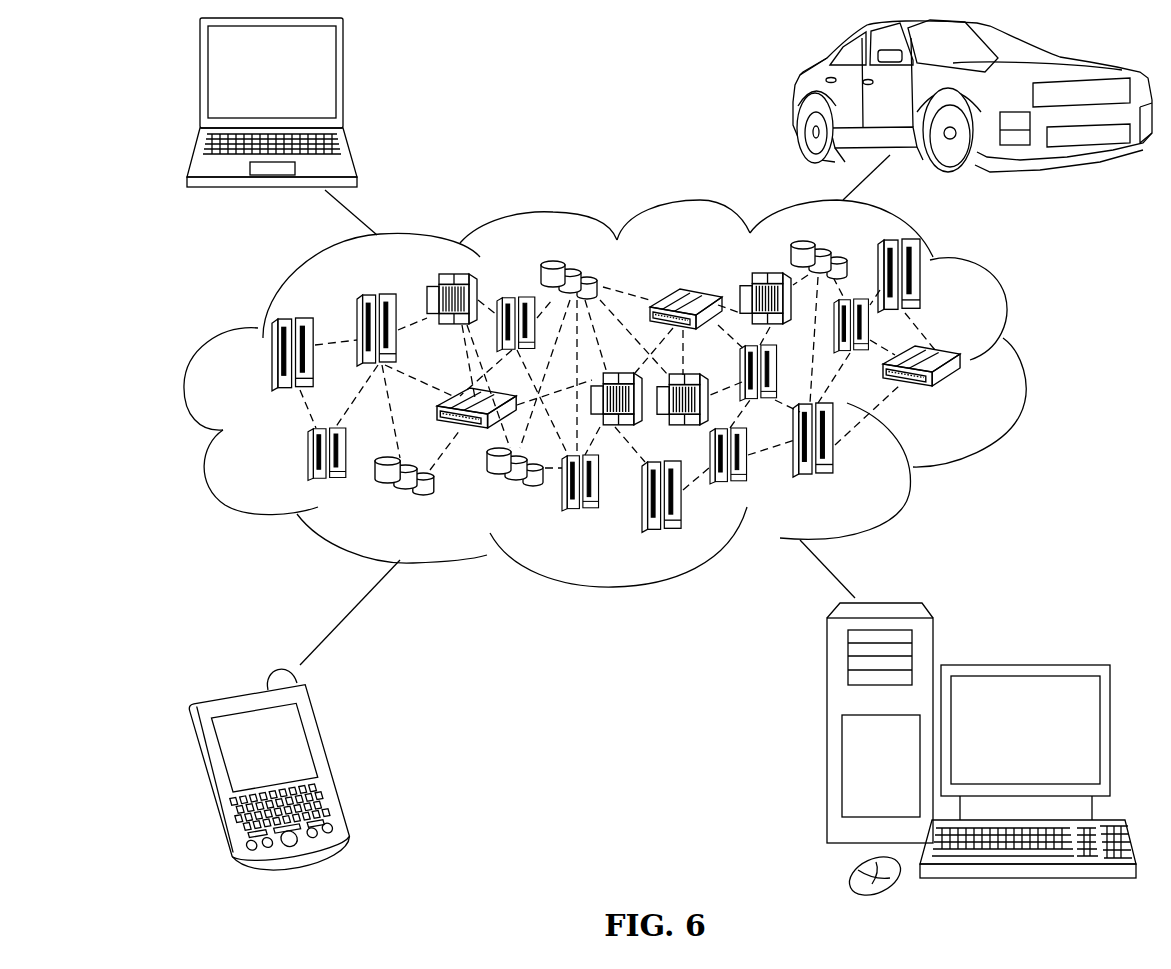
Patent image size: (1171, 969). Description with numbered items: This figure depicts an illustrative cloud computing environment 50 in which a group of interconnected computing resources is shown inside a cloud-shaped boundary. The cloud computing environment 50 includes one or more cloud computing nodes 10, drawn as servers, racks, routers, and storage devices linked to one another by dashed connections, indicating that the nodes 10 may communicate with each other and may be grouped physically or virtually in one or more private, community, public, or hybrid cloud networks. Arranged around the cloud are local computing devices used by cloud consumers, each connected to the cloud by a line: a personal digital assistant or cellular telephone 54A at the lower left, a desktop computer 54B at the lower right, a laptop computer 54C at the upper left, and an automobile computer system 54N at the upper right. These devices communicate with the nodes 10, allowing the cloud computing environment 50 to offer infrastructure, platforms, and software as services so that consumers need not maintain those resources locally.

The cloud computing node 10 is at (973, 399).
The cloud computing environment 50 is at (638, 393).
The personal digital assistant or cellular telephone 54A is at (332, 760).
The desktop computer 54B is at (1022, 665).
The laptop computer 54C is at (343, 80).
The automobile computer system 54N is at (798, 98).